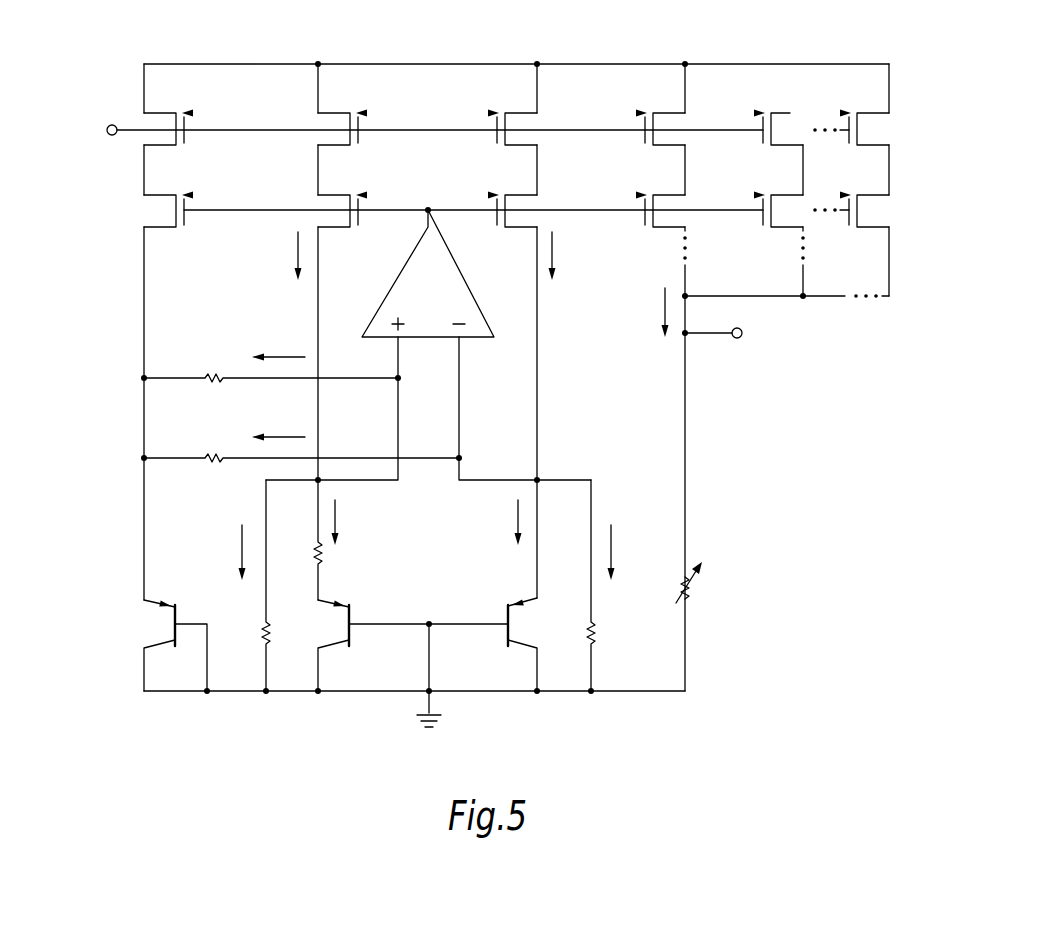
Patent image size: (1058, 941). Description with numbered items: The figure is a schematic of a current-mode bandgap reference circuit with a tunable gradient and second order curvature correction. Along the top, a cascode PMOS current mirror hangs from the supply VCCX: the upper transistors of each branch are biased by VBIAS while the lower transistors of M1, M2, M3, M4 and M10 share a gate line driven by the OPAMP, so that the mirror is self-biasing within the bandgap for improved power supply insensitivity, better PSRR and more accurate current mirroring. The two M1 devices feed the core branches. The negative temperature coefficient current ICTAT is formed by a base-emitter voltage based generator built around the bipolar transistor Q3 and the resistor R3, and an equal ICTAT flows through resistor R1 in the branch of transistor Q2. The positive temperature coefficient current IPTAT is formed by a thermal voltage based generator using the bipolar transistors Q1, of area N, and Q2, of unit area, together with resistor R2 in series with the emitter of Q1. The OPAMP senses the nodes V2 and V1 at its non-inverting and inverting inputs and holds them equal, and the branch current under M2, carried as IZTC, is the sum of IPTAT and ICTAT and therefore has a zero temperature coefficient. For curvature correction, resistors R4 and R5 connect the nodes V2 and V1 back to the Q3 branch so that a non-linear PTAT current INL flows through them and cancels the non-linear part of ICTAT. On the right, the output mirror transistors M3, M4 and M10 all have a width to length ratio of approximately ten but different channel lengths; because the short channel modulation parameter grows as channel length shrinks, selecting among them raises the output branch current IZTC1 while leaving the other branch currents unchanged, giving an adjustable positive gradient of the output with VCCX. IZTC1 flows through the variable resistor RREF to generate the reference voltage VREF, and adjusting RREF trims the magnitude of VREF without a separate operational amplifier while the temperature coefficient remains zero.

The PMOS current mirror transistor M1 is at (240, 169).
The PMOS current mirror transistor M2 is at (503, 169).
The PMOS current mirror transistor M3 is at (652, 169).
The PMOS current mirror transistor M4 is at (769, 169).
The PMOS current mirror transistor M10 is at (856, 169).
The resistor R1 is at (607, 587).
The resistor R2 is at (309, 540).
The resistor R3 is at (253, 587).
The resistor R4 is at (269, 364).
The resistor R5 is at (300, 477).
The variable reference resistor RREF is at (706, 584).
The bipolar transistor Q1 is at (372, 636).
The bipolar transistor Q2 is at (487, 636).
The bipolar transistor Q3 is at (170, 647).
The operational amplifier OPAMP is at (428, 273).
The supply voltage VCCX is at (516, 44).
The bias voltage VBIAS is at (86, 131).
The reference voltage VREF is at (734, 337).
The opamp input node V1 is at (523, 410).
The opamp input node V2 is at (333, 410).
The zero temperature coefficient current IZTC is at (431, 256).
The output branch current IZTC1 is at (644, 312).
The non-linear PTAT current INL is at (278, 386).
The PTAT current IPTAT is at (427, 522).
The CTAT current ICTAT is at (428, 552).